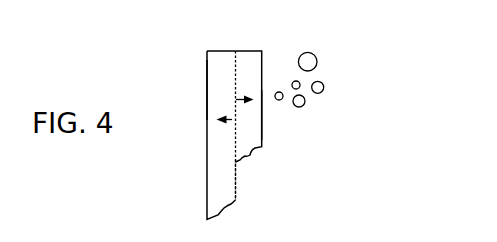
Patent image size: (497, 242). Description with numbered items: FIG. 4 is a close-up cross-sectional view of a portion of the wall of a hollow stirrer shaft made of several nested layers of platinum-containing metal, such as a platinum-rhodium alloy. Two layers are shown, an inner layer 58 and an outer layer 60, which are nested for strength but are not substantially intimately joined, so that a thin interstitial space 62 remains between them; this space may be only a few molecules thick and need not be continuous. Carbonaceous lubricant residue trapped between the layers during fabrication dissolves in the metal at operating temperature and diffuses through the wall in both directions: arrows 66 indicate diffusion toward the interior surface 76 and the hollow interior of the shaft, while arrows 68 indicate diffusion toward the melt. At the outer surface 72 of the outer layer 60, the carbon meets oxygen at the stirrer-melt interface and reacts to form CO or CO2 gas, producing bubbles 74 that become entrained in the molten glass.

The inner layer 58 is at (216, 41).
The outer layer 60 is at (252, 41).
The interior surface 76 is at (207, 90).
The outer surface 72 is at (262, 113).
The arrows 68 is at (238, 100).
The arrows 66 is at (230, 120).
The interstitial space 62 is at (245, 172).
The bubbles 74 is at (315, 55).